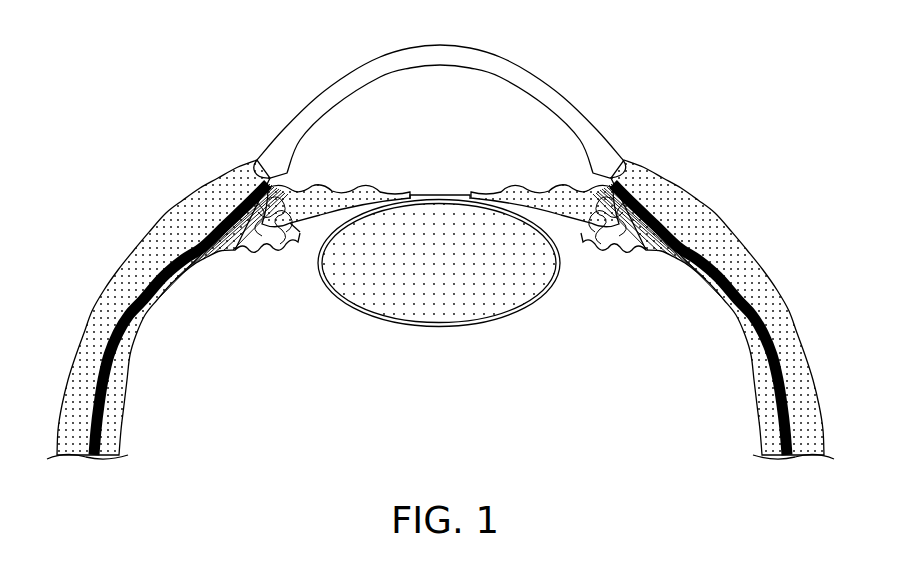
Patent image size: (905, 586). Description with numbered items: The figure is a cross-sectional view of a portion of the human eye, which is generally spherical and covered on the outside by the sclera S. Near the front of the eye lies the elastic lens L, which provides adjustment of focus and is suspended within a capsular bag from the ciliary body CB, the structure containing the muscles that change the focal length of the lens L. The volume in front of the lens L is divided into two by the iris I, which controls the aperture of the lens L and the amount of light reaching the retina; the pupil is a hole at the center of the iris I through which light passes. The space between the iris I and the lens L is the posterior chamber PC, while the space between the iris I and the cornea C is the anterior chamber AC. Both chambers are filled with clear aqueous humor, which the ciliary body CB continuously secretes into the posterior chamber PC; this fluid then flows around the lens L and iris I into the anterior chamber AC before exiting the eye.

The cornea C is at (518, 80).
The iris I is at (562, 190).
The anterior chamber AC is at (452, 141).
The sclera S is at (703, 218).
The posterior chamber PC is at (323, 228).
The lens L is at (483, 302).
The ciliary body CB is at (594, 257).